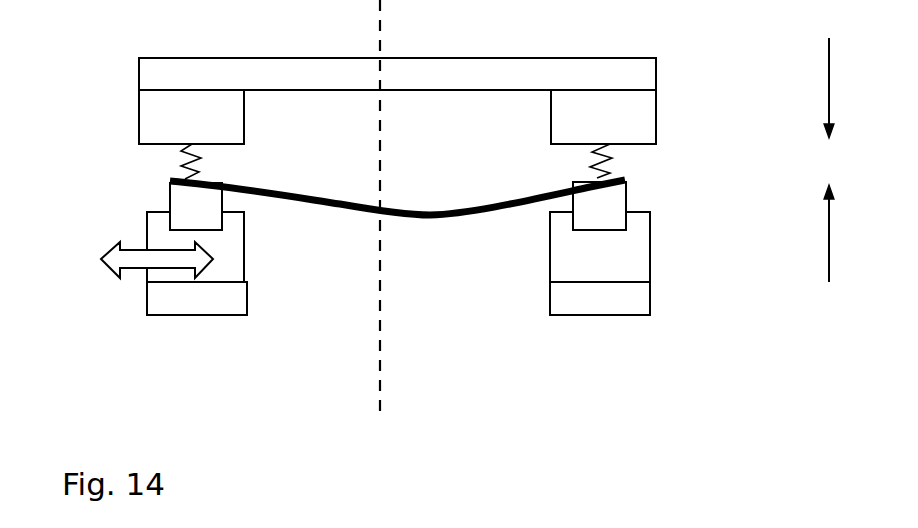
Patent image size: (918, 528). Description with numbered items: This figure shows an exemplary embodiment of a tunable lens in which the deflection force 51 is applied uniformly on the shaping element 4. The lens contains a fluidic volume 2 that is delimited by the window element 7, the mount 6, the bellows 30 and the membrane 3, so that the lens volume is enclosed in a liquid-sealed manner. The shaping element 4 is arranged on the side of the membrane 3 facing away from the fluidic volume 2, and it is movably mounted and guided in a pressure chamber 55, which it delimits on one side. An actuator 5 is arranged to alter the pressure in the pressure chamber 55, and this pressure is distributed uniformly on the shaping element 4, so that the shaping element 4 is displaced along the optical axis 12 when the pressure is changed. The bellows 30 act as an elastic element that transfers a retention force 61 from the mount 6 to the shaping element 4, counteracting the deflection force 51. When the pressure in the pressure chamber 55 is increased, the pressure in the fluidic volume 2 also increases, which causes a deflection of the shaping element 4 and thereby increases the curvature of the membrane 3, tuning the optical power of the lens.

The fluidic volume 2 is at (426, 72).
The window element 7 is at (609, 70).
The mount 6 is at (620, 130).
The bellows 30 is at (610, 173).
The membrane 3 is at (450, 218).
The shaping element 4 is at (605, 212).
The pressure chamber 55 is at (607, 268).
The actuator 5 is at (133, 260).
The optical axis 12 is at (378, 328).
The retention force 61 is at (828, 70).
The deflection force 51 is at (828, 215).